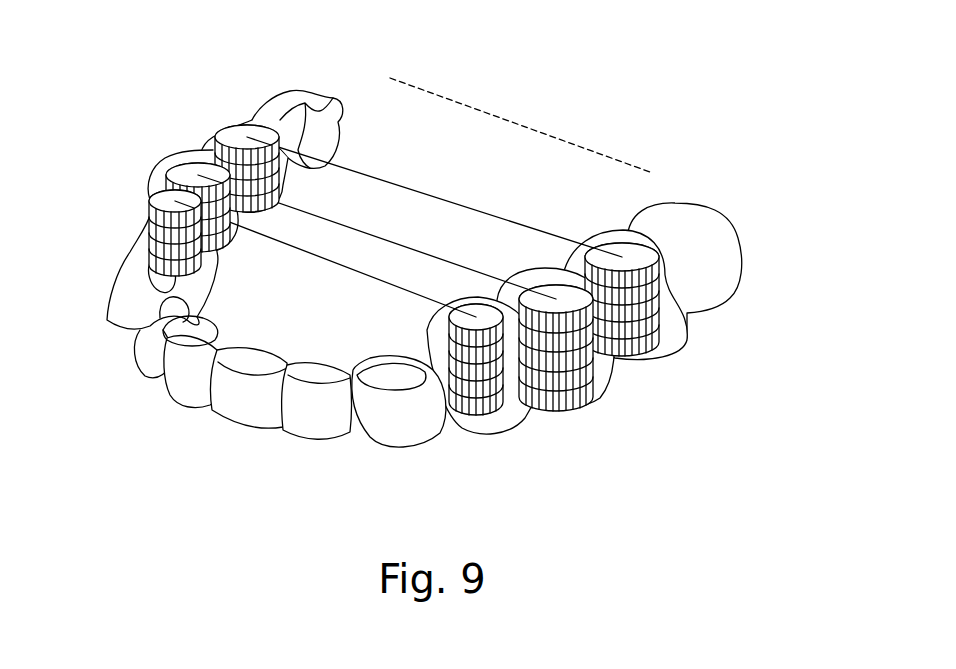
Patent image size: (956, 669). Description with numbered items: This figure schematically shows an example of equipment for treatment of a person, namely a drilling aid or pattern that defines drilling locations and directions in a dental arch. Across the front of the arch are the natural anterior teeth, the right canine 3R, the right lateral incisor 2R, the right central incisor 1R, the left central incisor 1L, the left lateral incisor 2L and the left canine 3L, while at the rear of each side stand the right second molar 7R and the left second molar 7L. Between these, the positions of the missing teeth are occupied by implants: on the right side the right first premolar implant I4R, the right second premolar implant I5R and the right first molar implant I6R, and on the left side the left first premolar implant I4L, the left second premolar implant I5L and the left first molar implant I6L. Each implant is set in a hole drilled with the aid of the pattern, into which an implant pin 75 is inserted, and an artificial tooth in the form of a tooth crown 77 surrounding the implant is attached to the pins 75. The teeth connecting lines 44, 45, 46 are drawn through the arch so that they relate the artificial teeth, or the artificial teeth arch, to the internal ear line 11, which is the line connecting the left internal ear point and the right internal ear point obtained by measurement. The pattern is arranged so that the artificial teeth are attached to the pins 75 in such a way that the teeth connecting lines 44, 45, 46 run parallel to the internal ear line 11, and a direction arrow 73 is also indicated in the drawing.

The right second molar 7R is at (287, 100).
The left second molar 7L is at (687, 270).
The right first molar implant I6R is at (213, 135).
The right second premolar implant I5R is at (165, 182).
The right first premolar implant I4R is at (148, 192).
The left first premolar implant I4L is at (493, 400).
The left second premolar implant I5L is at (597, 393).
The left first molar implant I6L is at (660, 327).
The tooth crown surrounding implant 77 is at (232, 122).
The implant pins 75 is at (287, 183).
The right canine 3R is at (108, 330).
The right lateral incisor 2R is at (140, 350).
The right central incisor 1R is at (170, 387).
The left central incisor 1L is at (230, 410).
The left lateral incisor 2L is at (280, 443).
The left canine 3L is at (390, 430).
The teeth connecting line 44 is at (378, 279).
The teeth connecting line 45 is at (411, 249).
The teeth connecting line 46 is at (462, 206).
The internal ear line 11 is at (545, 133).
The direction arrow 73 is at (737, 343).